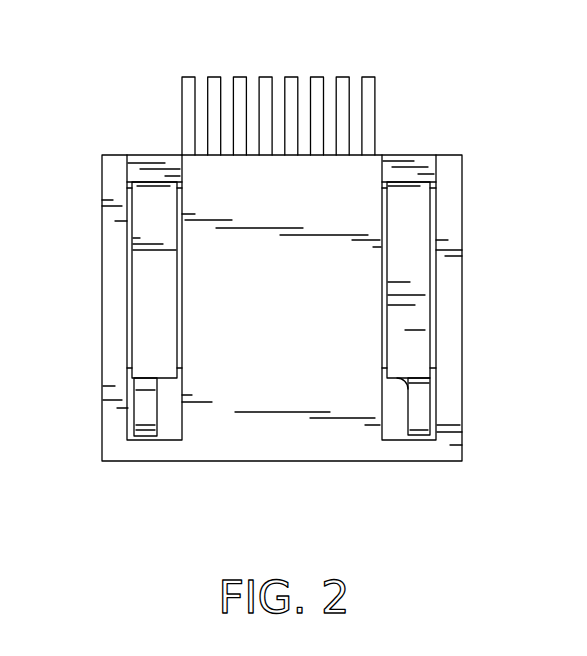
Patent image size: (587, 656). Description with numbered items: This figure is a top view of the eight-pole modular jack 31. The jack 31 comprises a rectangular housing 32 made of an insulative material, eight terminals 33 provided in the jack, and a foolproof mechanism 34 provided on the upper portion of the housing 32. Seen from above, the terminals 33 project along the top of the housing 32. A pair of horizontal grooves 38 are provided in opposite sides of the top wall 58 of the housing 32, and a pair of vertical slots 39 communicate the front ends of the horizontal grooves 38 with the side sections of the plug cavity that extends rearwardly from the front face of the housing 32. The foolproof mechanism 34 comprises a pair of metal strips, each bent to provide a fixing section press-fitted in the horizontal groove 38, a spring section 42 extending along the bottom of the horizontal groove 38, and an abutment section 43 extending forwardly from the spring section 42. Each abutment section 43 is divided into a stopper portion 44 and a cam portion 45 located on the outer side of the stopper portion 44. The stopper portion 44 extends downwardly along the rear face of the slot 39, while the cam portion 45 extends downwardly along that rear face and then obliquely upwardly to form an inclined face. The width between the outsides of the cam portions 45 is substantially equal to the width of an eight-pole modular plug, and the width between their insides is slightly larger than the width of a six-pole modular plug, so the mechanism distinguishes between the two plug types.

The eight-pole modular jack 31 is at (405, 132).
The rectangular housing 32 is at (447, 289).
The terminals 33 is at (265, 90).
The foolproof mechanism 34 is at (405, 232).
The horizontal grooves 38 is at (152, 295).
The vertical slots 39 is at (170, 414).
The spring section 42 is at (405, 330).
The abutment section 43 is at (417, 437).
The stopper portion 44 is at (400, 390).
The cam portion 45 is at (417, 387).
The top wall 58 is at (296, 309).